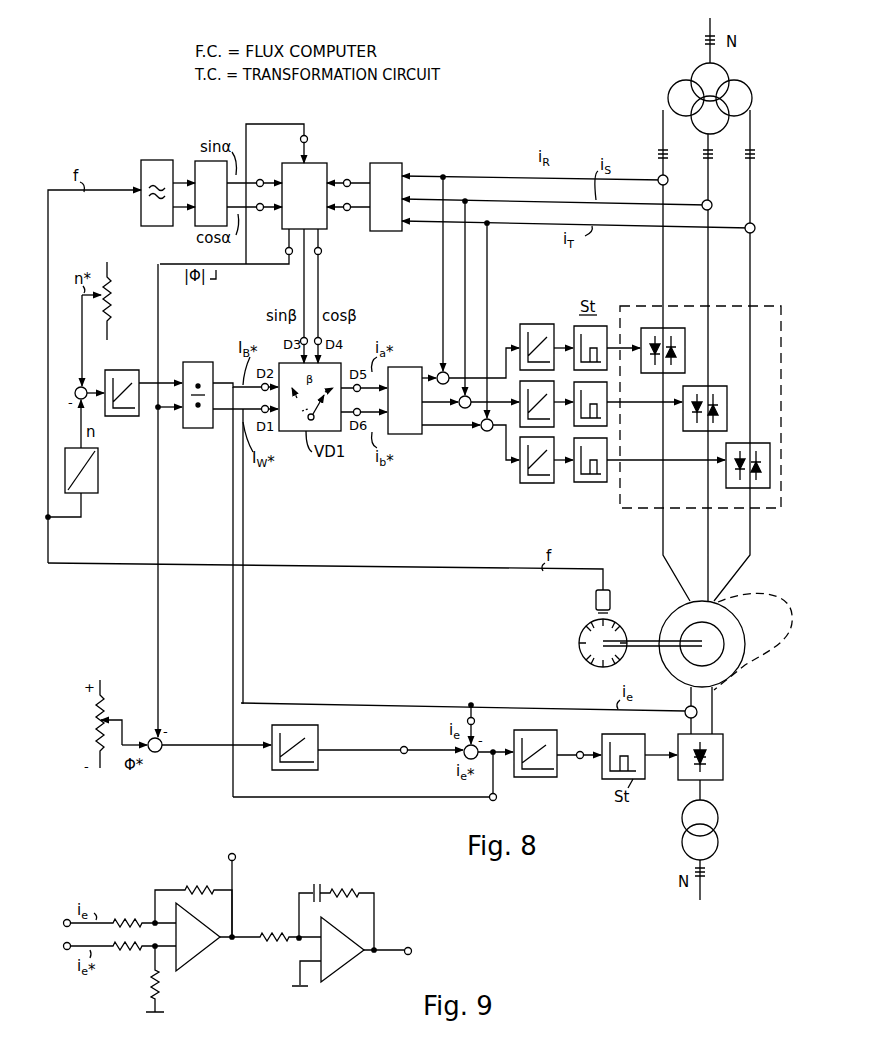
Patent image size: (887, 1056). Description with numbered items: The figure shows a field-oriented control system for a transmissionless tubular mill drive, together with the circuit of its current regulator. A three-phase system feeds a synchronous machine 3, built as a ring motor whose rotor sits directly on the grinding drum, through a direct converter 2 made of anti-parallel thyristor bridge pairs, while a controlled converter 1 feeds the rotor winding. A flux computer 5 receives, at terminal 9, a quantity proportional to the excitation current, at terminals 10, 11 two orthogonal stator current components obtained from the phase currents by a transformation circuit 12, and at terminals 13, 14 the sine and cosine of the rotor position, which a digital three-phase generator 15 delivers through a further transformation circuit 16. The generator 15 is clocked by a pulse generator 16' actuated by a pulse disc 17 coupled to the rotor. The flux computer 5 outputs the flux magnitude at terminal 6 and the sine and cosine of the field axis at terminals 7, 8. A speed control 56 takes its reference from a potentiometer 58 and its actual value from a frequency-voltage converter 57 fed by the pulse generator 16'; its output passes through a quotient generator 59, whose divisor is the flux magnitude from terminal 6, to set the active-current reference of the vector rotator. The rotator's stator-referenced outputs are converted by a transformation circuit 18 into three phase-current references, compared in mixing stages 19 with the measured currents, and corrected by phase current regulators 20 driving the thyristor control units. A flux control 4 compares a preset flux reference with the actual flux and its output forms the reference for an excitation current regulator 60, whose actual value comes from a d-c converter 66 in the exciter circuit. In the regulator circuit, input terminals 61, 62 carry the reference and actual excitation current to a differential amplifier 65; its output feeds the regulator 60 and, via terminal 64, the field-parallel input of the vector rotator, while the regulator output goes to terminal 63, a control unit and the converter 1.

In FIG. 8, the controlled converter 1 is at (723, 757).
In FIG. 8, the direct converter 2 is at (641, 306).
In FIG. 8, the synchronous machine 3 is at (672, 622).
In FIG. 8, the flux control 4 is at (318, 730).
In FIG. 8, the flux computer 5 is at (304, 196).
In FIG. 8, the terminal 6 is at (226, 246).
In FIG. 8, the terminal 7 is at (300, 264).
In FIG. 8, the terminal 8 is at (324, 296).
In FIG. 8, the terminal 9 is at (283, 194).
In FIG. 8, the terminal 10 is at (348, 172).
In FIG. 8, the terminal 11 is at (348, 220).
In FIG. 8, the transformation circuit 12 is at (386, 197).
In FIG. 8, the terminal 13 is at (254, 172).
In FIG. 8, the terminal 14 is at (254, 220).
In FIG. 8, the digital three-phase generator 15 is at (165, 160).
In FIG. 8, the transformation circuit 16 is at (211, 193).
In FIG. 8, the pulse generator 16' is at (588, 600).
In FIG. 8, the pulse disc 17 is at (580, 634).
In FIG. 8, the transformation circuit 18 is at (405, 400).
In FIG. 8, the mixing stages 19 is at (443, 384).
In FIG. 8, the phase current regulators 20 is at (547, 315).
In FIG. 8, the speed control 56 is at (118, 370).
In FIG. 8, the frequency-voltage converter 57 is at (98, 471).
In FIG. 8, the potentiometer 58 is at (113, 296).
In FIG. 8, the quotient generator 59 is at (195, 362).
In FIG. 8, the excitation current regulator 60 is at (546, 777).
In FIG. 9, the excitation current regulator 60 is at (348, 962).
In FIG. 8, the input terminal 61 is at (390, 763).
In FIG. 9, the input terminal 61 is at (106, 947).
In FIG. 8, the input terminal 62 is at (484, 724).
In FIG. 9, the input terminal 62 is at (106, 924).
In FIG. 8, the terminal 63 is at (579, 744).
In FIG. 9, the terminal 63 is at (400, 952).
In FIG. 8, the terminal 64 is at (376, 779).
In FIG. 9, the terminal 64 is at (245, 893).
In FIG. 9, the differential amplifier 65 is at (200, 950).
In FIG. 8, the d-c converter 66 is at (686, 709).